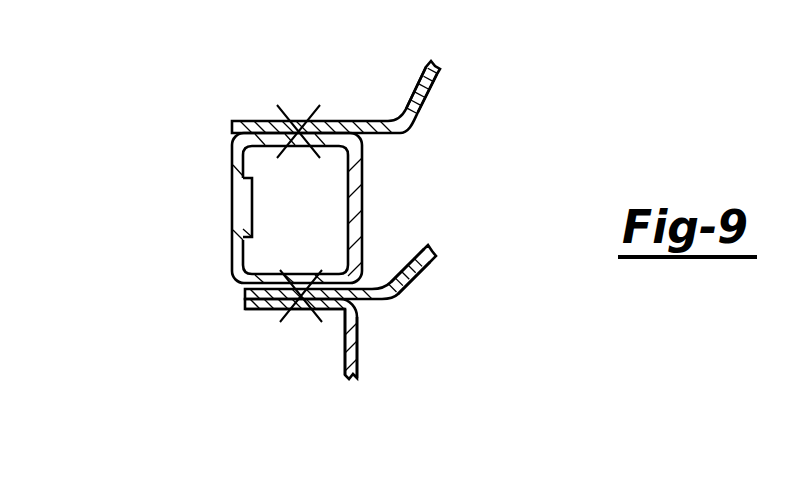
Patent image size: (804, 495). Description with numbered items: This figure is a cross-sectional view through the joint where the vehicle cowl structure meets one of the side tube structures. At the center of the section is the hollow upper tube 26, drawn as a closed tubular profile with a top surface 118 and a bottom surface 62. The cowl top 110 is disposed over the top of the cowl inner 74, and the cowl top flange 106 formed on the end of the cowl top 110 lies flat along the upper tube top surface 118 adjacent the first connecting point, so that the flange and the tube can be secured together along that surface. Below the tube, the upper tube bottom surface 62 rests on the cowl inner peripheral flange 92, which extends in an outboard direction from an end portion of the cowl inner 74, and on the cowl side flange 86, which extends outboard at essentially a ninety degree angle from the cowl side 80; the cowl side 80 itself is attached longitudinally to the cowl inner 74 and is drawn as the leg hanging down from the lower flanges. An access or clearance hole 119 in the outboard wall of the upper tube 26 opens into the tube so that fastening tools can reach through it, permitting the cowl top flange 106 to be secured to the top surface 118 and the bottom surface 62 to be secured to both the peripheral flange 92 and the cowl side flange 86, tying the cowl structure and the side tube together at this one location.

The upper tube 26 is at (86, 188).
The upper tube bottom surface 62 is at (242, 289).
The cowl inner 74 is at (403, 284).
The cowl side 80 is at (343, 340).
The cowl side flange 86 is at (263, 311).
The cowl inner peripheral flange 92 is at (244, 303).
The cowl top flange 106 is at (257, 120).
The cowl top 110 is at (410, 97).
The upper tube top surface 118 is at (229, 139).
The access hole 119 is at (209, 202).